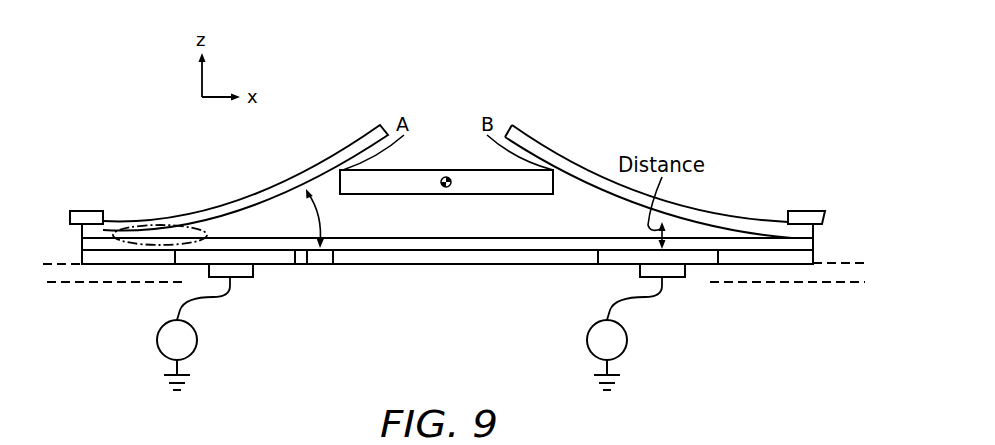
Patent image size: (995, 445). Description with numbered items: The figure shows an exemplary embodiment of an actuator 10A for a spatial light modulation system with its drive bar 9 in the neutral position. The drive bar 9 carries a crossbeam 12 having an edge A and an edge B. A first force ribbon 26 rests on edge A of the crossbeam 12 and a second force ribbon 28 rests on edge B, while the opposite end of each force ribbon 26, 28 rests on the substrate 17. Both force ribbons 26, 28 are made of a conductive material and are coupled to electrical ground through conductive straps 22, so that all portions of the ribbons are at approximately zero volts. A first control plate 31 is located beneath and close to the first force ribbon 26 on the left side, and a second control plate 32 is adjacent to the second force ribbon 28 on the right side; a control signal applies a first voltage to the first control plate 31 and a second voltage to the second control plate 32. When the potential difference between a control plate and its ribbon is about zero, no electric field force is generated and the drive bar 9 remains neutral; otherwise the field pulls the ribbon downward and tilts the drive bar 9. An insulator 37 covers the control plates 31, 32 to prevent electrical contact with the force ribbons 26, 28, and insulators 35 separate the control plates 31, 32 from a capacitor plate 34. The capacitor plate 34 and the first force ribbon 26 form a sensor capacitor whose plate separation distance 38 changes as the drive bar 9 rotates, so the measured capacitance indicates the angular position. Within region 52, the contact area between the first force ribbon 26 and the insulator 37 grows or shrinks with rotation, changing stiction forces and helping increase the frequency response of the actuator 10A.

The actuator 10A is at (106, 106).
The drive bar 9 is at (428, 170).
The crossbeam 12 is at (478, 195).
The substrate 17 is at (832, 244).
The conductive straps 22 is at (86, 211).
The first force ribbon 26 is at (342, 148).
The second force ribbon 28 is at (557, 150).
The first control plate 31 is at (273, 256).
The second control plate 32 is at (623, 248).
The capacitor plate 34 is at (328, 249).
The insulators 35 is at (82, 257).
The insulator 37 is at (481, 237).
The plate separation distance 38 is at (312, 219).
The region 52 is at (183, 225).